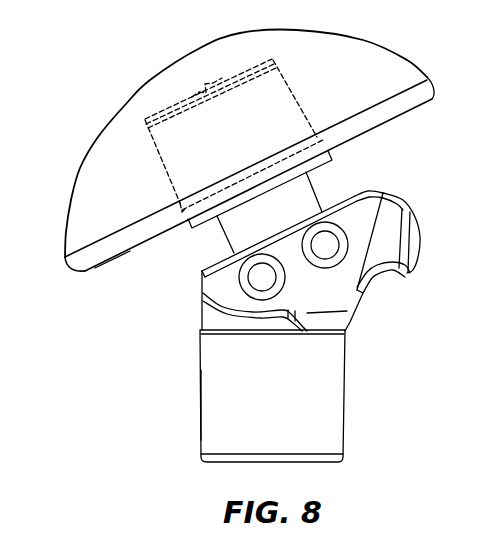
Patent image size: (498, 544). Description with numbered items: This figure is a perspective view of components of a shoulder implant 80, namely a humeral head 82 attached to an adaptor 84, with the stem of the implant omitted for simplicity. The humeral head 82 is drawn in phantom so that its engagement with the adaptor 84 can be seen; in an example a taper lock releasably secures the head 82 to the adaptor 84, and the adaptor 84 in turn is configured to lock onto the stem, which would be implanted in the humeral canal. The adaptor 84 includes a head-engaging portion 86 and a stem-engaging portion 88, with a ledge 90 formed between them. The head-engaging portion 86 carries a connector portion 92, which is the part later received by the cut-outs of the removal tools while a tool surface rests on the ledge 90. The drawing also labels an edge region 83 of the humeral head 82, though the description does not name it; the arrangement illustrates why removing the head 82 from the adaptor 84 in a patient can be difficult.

The shoulder implant 80 is at (99, 50).
The humeral head 82 is at (97, 172).
The lens edge 83 is at (102, 266).
The adaptor 84 is at (345, 390).
The head-engaging portion 86 is at (330, 158).
The stem-engaging portion 88 is at (215, 397).
The ledge 90 is at (220, 266).
The connector portion 92 is at (318, 190).